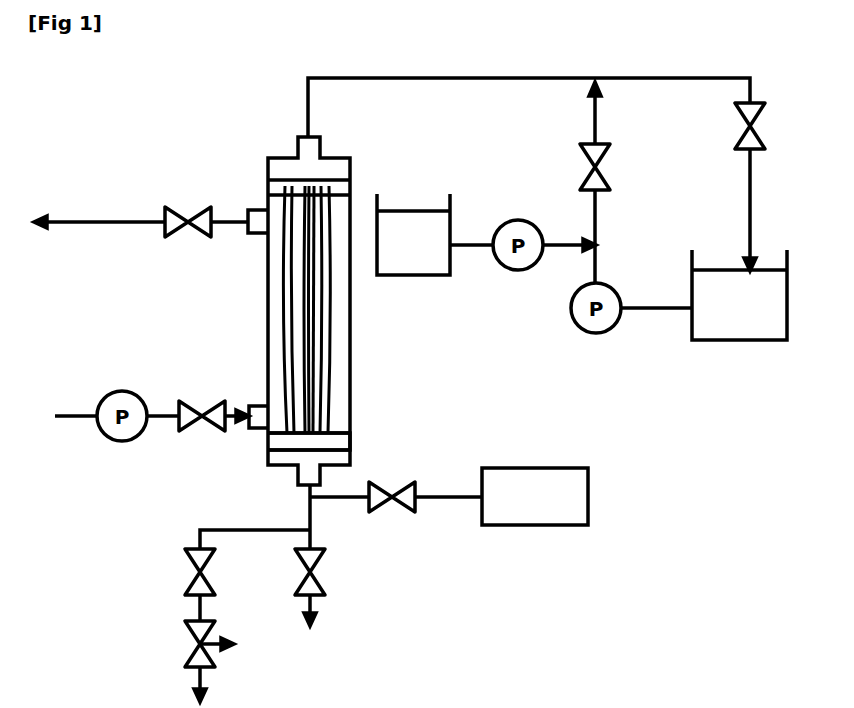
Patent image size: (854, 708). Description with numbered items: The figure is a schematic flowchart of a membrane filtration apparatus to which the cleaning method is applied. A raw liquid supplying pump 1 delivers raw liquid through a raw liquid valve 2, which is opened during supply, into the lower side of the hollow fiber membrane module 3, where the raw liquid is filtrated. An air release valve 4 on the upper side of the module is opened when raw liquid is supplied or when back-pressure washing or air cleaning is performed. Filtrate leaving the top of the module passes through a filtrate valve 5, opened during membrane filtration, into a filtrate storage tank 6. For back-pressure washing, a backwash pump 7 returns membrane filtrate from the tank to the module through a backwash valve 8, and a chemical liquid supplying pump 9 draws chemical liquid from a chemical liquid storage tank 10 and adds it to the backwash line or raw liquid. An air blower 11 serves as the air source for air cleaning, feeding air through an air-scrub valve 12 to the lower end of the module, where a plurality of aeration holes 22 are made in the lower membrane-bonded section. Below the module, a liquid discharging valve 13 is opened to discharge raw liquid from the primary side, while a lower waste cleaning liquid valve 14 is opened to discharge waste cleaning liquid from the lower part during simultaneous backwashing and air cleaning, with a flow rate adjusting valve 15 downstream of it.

The raw liquid supplying pump 1 is at (118, 441).
The raw liquid valve 2 is at (202, 416).
The hollow fiber membrane module 3 is at (350, 386).
The air release valve 4 is at (188, 222).
The filtrate valve 5 is at (750, 126).
The filtrate storage tank 6 is at (752, 340).
The backwash pump 7 is at (584, 333).
The backwash valve 8 is at (595, 167).
The chemical liquid supplying pump 9 is at (506, 270).
The chemical liquid storage tank 10 is at (400, 275).
The air blower 11 is at (570, 525).
The air-scrub valve 12 is at (392, 497).
The liquid discharging valve 13 is at (310, 572).
The lower waste cleaning liquid valve 14 is at (200, 572).
The flow rate adjusting valve 15 is at (200, 644).
The aeration holes 22 is at (350, 440).